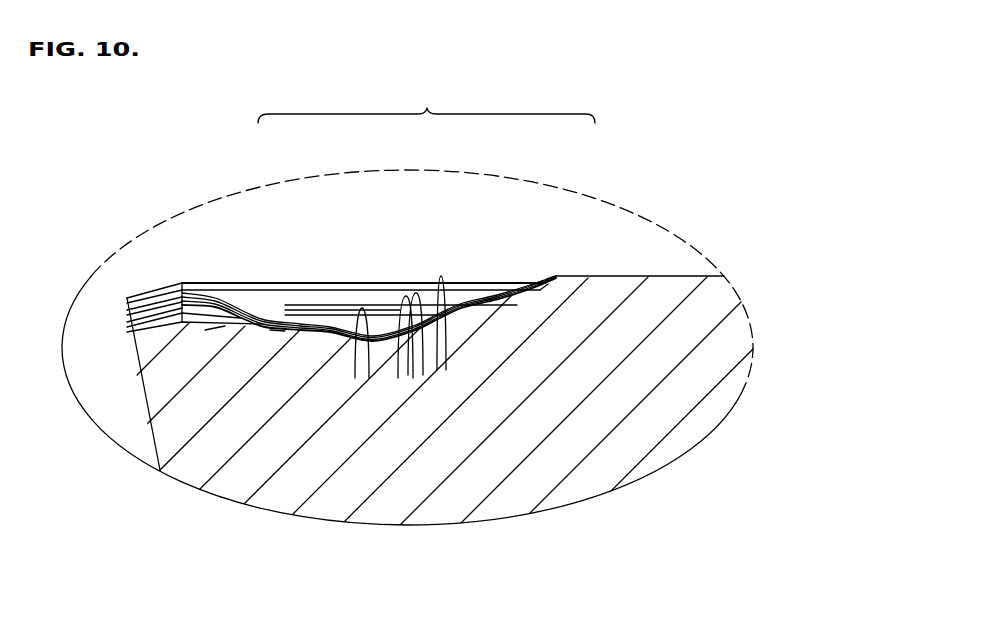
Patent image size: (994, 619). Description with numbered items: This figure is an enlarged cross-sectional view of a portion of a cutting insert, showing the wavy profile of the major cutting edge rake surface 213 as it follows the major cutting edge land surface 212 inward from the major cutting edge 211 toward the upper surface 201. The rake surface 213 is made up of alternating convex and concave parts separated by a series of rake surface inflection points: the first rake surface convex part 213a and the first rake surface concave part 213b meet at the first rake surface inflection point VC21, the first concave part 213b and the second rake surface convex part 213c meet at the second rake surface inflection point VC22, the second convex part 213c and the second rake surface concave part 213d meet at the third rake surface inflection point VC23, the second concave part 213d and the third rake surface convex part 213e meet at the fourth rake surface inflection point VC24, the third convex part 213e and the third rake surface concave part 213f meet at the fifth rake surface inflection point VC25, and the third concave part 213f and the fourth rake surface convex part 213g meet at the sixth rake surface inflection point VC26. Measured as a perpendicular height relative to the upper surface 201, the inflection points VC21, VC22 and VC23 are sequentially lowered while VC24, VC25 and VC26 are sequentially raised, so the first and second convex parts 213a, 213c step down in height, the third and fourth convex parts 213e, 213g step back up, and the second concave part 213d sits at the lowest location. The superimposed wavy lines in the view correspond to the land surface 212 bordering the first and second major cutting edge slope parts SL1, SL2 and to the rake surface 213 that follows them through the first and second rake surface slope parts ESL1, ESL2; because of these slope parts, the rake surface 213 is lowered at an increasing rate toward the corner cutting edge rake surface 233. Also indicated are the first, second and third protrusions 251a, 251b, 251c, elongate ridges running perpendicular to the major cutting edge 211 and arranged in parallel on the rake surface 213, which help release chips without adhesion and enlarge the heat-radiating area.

The upper surface 201 is at (633, 276).
The major cutting edge 211 is at (130, 332).
The major cutting edge land surface 212 is at (165, 295).
The major cutting edge rake surface 213 is at (388, 187).
The first rake surface convex part 213a is at (243, 318).
The first rake surface concave part 213b is at (290, 305).
The second rake surface convex part 213c is at (340, 305).
The second rake surface concave part 213d is at (397, 305).
The third rake surface convex part 213e is at (460, 300).
The third rake surface concave part 213f is at (506, 298).
The fourth rake surface convex part 213g is at (540, 285).
The first major cutting edge slope part SL1 is at (130, 297).
The second major cutting edge slope part SL2 is at (130, 306).
The first rake surface slope part ESL1 is at (182, 292).
The second rake surface slope part ESL2 is at (213, 300).
The first rake surface inflection point VC21 is at (221, 327).
The second rake surface inflection point VC22 is at (277, 333).
The third rake surface inflection point VC23 is at (355, 376).
The fourth rake surface inflection point VC24 is at (446, 368).
The fifth rake surface inflection point VC25 is at (515, 335).
The sixth rake surface inflection point VC26 is at (540, 287).
The first protrusion 251a is at (437, 340).
The second protrusion 251b is at (395, 336).
The third protrusion 251c is at (345, 338).
The corner cutting edge rake surface 233 is at (460, 334).